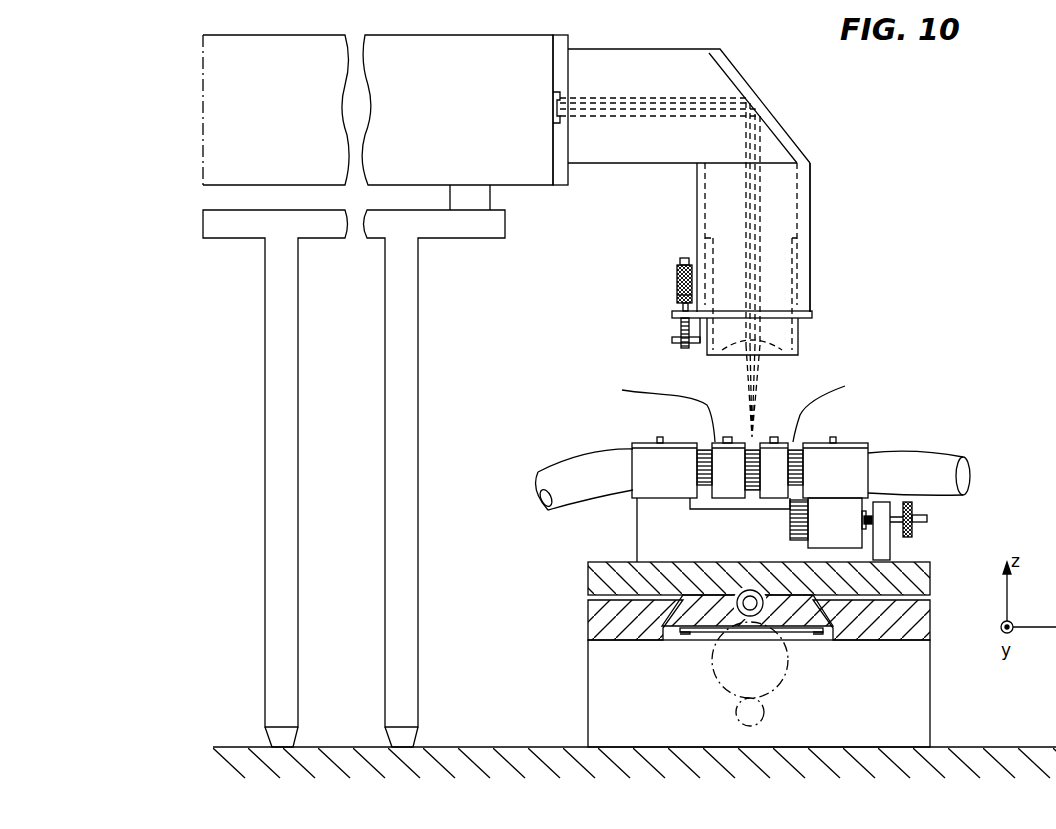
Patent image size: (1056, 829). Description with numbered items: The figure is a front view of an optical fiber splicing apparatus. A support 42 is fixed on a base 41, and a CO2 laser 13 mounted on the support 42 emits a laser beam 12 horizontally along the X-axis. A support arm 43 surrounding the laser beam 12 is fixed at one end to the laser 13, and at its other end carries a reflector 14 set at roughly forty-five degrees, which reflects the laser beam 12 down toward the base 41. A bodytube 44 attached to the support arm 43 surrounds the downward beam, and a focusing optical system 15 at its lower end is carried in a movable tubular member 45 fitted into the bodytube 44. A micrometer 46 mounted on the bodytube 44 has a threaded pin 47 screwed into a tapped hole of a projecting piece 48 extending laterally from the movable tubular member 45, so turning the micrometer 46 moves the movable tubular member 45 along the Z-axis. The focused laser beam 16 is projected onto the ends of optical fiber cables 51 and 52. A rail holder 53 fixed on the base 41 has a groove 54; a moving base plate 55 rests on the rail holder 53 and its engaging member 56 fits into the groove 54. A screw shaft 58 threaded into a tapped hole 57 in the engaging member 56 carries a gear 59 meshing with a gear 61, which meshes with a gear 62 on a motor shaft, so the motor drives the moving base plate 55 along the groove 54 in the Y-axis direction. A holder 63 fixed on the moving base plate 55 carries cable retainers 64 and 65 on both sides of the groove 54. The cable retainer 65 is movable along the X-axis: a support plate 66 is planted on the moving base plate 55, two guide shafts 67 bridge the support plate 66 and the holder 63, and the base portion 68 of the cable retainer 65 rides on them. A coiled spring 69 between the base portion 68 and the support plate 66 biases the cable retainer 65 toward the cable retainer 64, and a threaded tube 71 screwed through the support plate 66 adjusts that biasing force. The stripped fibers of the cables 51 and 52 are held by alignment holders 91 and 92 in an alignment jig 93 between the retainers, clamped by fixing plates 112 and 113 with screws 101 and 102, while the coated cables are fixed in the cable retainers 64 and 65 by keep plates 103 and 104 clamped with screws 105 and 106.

The laser beam 12 is at (628, 112).
The CO2 laser 13 is at (488, 45).
The reflector 14 is at (741, 82).
The focusing optical system 15 is at (768, 347).
The focused laser beam 16 is at (755, 404).
The base 41 is at (478, 747).
The support 42 is at (462, 226).
The support arm 43 is at (647, 60).
The bodytube 44 is at (812, 221).
The movable tubular member 45 is at (798, 341).
The micrometer 46 is at (677, 283).
The pin 47 is at (678, 330).
The projecting piece 48 is at (700, 344).
The optical fiber cable 51 is at (582, 473).
The optical fiber cable 52 is at (935, 465).
The rail holder 53 is at (600, 682).
The groove 54 is at (834, 622).
The moving base plate 55 is at (610, 578).
The engaging member 56 is at (677, 614).
The tapped hole 57 is at (757, 598).
The screw shaft 58 is at (762, 608).
The gear 59 is at (733, 606).
The gear 61 is at (776, 678).
The gear 62 is at (767, 705).
The holder 63 is at (657, 525).
The cable retainer 64 is at (648, 467).
The cable retainer 65 is at (848, 467).
The support plate 66 is at (885, 553).
The guide shafts 67 is at (798, 518).
The base portion 68 is at (830, 545).
The coiled spring 69 is at (870, 524).
The threaded tube 71 is at (895, 519).
The alignment holder 91 is at (726, 479).
The alignment holder 92 is at (773, 479).
The alignment jig 93 is at (747, 500).
The screws 101 is at (722, 442).
The screws 102 is at (772, 442).
The keep plate 103 is at (683, 442).
The keep plate 104 is at (857, 442).
The screws 105 is at (660, 440).
The screws 106 is at (834, 442).
The fixing plate 112 is at (655, 406).
The fixing plate 113 is at (838, 403).